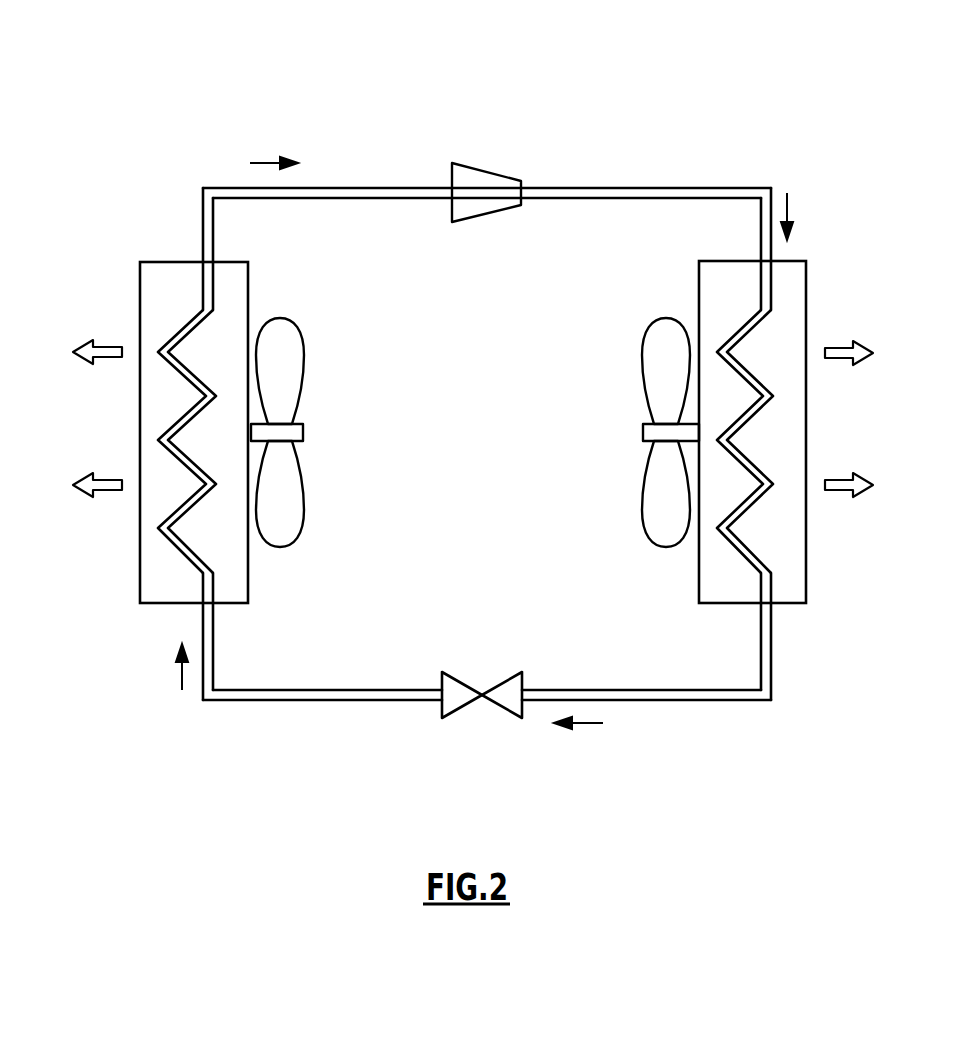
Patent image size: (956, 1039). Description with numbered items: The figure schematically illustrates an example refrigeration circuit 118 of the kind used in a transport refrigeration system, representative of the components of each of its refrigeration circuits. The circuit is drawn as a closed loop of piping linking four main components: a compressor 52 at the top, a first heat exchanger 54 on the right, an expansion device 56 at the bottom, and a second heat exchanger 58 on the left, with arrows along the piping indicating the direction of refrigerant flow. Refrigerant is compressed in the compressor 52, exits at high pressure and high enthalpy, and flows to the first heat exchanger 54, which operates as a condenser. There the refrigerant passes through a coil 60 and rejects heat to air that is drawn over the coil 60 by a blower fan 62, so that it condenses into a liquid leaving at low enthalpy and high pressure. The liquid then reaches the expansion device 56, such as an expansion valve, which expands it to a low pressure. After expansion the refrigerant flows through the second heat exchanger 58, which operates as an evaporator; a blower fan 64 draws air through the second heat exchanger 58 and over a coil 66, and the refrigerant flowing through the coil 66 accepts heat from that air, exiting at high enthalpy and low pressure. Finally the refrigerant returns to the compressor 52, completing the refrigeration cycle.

The refrigeration circuit 118 is at (724, 76).
The compressor 52 is at (470, 175).
The first heat exchanger 54 is at (772, 458).
The expansion device 56 is at (455, 700).
The second heat exchanger 58 is at (214, 459).
The coil 60 is at (750, 547).
The blower fan 62 is at (655, 517).
The blower fan 64 is at (290, 517).
The coil 66 is at (193, 547).